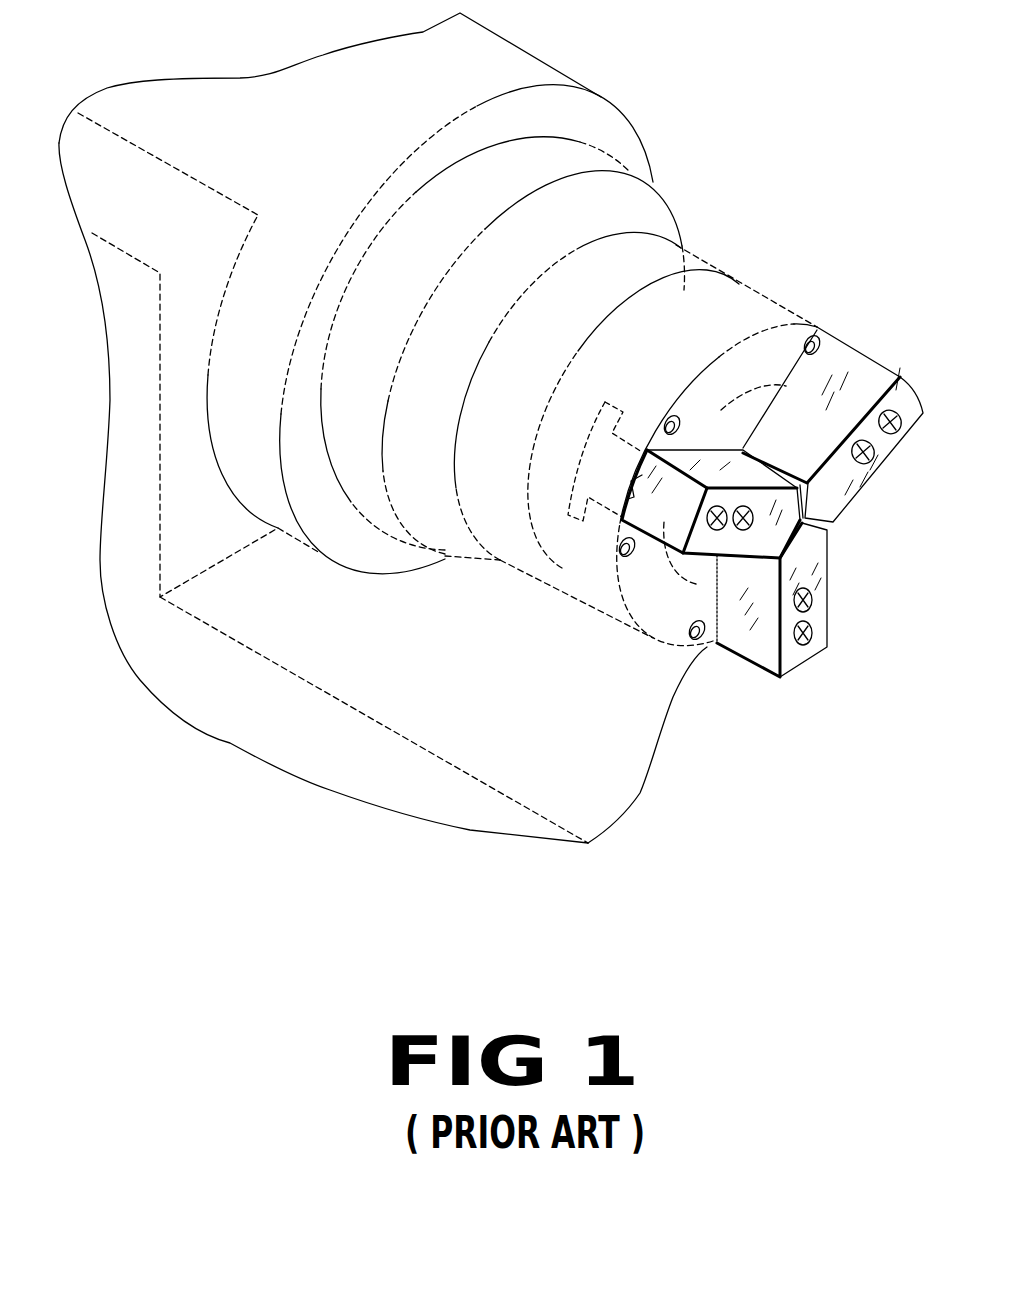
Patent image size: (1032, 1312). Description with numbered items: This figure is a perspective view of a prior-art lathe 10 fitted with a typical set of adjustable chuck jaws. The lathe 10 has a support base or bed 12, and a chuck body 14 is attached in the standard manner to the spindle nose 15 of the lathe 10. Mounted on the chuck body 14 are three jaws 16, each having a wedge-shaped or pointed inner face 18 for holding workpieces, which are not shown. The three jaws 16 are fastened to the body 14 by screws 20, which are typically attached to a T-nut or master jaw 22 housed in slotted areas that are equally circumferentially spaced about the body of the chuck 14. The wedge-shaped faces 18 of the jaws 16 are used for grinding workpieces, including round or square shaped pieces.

The lathe 10 is at (490, 50).
The bed of lathe 12 is at (285, 732).
The body of chuck 14 is at (727, 310).
The spindle 15 is at (663, 260).
The jaws 16 is at (870, 370).
The wedged face 18 is at (815, 507).
The head screw 20 is at (800, 643).
The master jaw/T-nut 22 is at (595, 470).